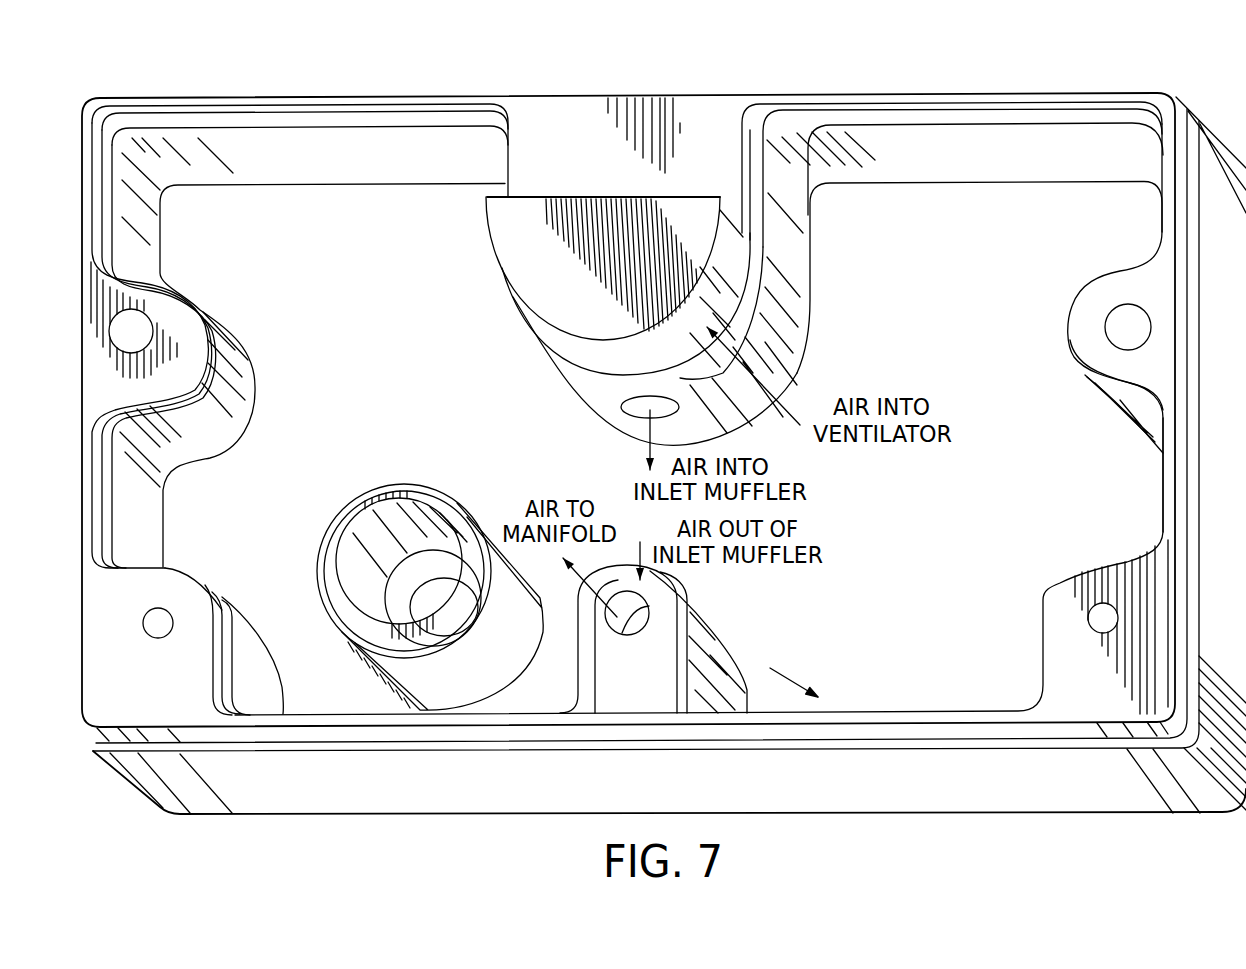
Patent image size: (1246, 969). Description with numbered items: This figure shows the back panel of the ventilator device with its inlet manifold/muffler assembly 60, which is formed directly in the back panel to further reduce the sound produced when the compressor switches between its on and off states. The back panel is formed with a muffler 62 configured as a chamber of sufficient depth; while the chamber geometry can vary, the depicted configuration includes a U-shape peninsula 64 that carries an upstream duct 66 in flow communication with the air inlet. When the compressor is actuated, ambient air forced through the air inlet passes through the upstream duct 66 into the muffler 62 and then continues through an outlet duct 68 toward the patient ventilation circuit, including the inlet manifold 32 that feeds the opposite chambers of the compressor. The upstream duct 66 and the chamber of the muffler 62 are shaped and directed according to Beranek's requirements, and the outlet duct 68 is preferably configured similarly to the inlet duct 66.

The inlet manifold/muffler assembly 60 is at (923, 178).
The muffler 62 is at (958, 343).
The U-shape peninsula 64 is at (542, 273).
The upstream duct 66 is at (642, 411).
The outlet duct 68 is at (612, 620).
The inlet manifold 32 is at (855, 680).